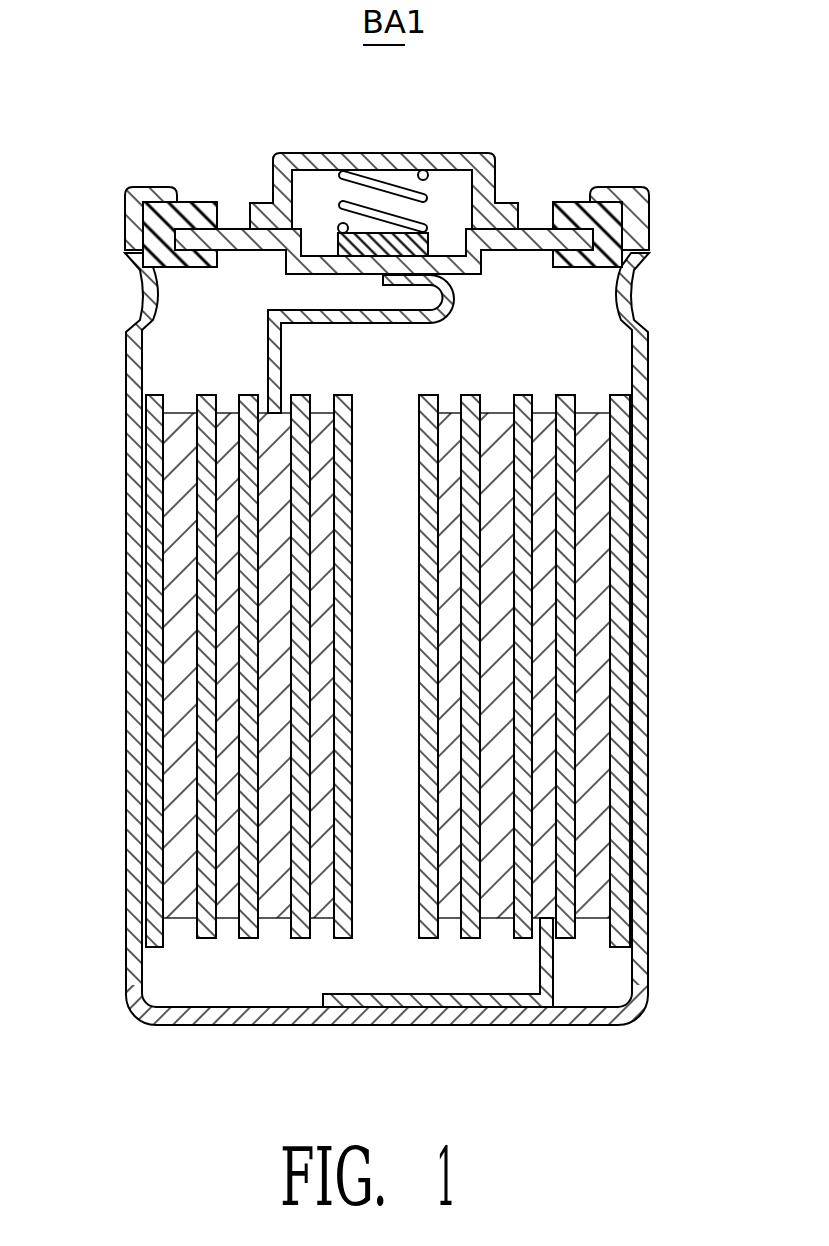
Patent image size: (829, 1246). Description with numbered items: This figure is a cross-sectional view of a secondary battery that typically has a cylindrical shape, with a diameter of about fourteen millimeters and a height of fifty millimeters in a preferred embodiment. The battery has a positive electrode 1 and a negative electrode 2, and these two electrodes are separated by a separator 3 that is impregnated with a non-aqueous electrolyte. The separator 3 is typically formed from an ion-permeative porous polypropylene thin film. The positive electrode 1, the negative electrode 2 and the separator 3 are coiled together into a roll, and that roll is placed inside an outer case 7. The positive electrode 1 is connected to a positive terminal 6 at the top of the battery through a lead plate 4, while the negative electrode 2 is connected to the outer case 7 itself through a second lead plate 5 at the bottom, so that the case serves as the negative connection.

The positive electrode 1 is at (593, 550).
The negative electrode 2 is at (543, 697).
The separator 3 is at (563, 447).
The lead plate 4 is at (287, 308).
The lead plate 5 is at (472, 998).
The positive terminal 6 is at (418, 153).
The outer case 7 is at (648, 858).